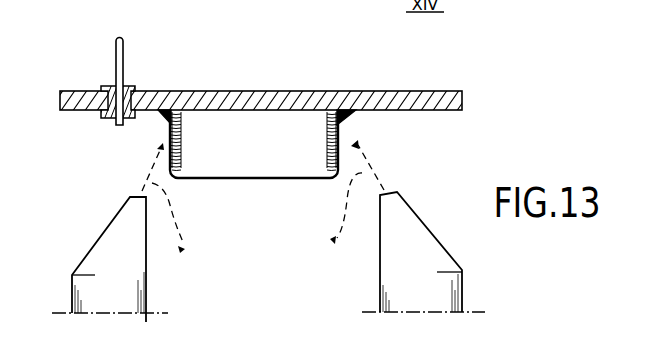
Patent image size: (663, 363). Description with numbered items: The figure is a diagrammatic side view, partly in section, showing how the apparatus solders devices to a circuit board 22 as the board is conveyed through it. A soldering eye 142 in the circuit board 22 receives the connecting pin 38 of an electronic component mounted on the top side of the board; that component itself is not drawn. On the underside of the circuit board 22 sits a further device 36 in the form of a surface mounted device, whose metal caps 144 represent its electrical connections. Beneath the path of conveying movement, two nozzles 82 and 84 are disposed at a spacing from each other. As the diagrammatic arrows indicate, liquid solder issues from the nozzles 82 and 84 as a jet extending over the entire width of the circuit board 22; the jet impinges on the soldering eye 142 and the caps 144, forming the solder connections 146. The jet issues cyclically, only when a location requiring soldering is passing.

The circuit board 22 is at (402, 99).
The device 36 is at (277, 157).
The connecting pin 38 is at (122, 48).
The nozzle 82 is at (98, 253).
The nozzle 84 is at (427, 252).
The soldering eye 142 is at (150, 92).
The metal caps 144 is at (178, 153).
The solder connections 146 is at (163, 114).